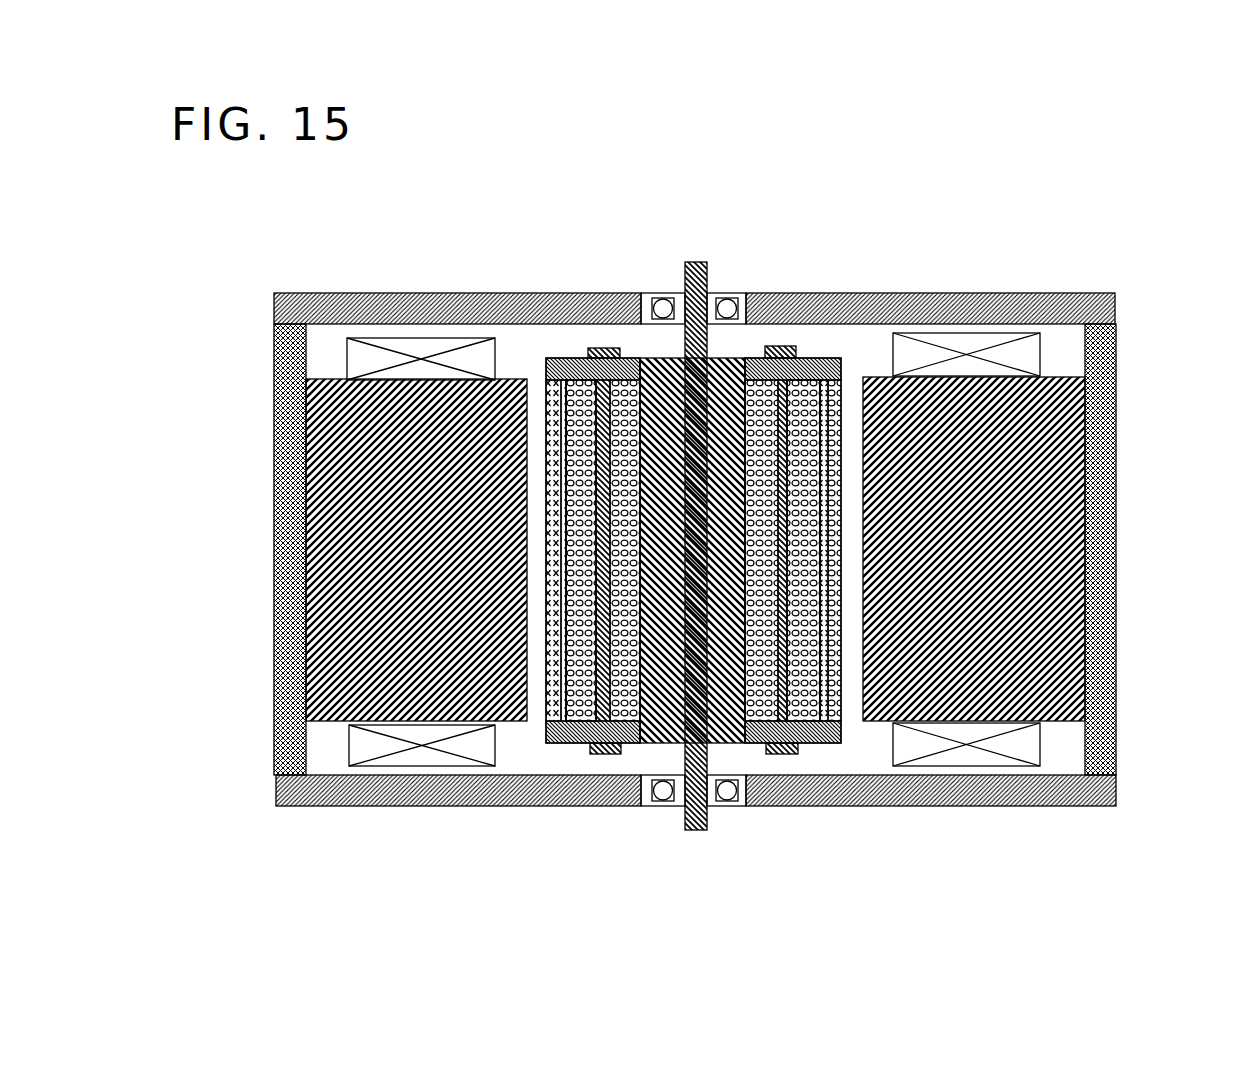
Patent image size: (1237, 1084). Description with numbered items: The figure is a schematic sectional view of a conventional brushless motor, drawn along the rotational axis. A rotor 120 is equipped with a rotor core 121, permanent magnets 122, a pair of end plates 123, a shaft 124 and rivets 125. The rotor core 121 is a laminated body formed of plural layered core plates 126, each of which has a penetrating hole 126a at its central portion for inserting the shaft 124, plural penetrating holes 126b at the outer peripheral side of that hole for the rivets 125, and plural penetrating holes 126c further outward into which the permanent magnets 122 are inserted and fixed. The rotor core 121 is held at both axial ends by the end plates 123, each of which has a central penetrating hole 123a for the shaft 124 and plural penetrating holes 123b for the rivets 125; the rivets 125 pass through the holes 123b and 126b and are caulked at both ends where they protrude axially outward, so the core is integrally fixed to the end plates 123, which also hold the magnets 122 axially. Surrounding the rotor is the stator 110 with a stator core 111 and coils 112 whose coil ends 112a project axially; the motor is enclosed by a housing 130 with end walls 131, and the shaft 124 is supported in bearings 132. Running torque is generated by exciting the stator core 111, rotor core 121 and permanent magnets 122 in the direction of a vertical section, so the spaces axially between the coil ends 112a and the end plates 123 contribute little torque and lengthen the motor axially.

The stator 110 is at (673, 554).
The stator core 111 is at (322, 702).
The stator coil 112 is at (417, 750).
The coil ends 112a is at (420, 330).
The rotor 120 is at (699, 547).
The rotor core 121 is at (849, 544).
The permanent magnets 122 is at (543, 697).
The end plates 123 is at (553, 372).
The penetrating hole 123a is at (750, 350).
The penetrating holes 123b is at (800, 350).
The shaft 124 is at (687, 822).
The rivets 125 is at (597, 746).
The core plates 126 is at (583, 534).
The penetrating hole 126a is at (627, 350).
The penetrating holes 126b is at (615, 340).
The penetrating holes 126c is at (566, 372).
The housing side wall 130 is at (268, 590).
The housing end plate 131 is at (1105, 298).
The bearing 132 is at (718, 292).